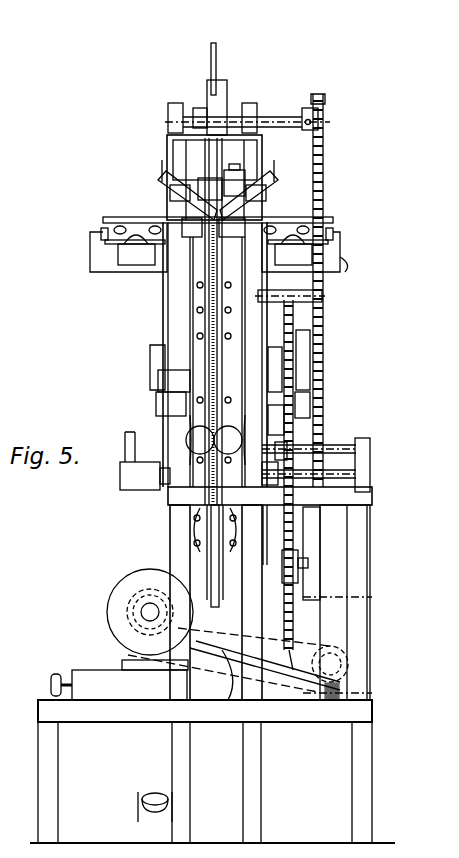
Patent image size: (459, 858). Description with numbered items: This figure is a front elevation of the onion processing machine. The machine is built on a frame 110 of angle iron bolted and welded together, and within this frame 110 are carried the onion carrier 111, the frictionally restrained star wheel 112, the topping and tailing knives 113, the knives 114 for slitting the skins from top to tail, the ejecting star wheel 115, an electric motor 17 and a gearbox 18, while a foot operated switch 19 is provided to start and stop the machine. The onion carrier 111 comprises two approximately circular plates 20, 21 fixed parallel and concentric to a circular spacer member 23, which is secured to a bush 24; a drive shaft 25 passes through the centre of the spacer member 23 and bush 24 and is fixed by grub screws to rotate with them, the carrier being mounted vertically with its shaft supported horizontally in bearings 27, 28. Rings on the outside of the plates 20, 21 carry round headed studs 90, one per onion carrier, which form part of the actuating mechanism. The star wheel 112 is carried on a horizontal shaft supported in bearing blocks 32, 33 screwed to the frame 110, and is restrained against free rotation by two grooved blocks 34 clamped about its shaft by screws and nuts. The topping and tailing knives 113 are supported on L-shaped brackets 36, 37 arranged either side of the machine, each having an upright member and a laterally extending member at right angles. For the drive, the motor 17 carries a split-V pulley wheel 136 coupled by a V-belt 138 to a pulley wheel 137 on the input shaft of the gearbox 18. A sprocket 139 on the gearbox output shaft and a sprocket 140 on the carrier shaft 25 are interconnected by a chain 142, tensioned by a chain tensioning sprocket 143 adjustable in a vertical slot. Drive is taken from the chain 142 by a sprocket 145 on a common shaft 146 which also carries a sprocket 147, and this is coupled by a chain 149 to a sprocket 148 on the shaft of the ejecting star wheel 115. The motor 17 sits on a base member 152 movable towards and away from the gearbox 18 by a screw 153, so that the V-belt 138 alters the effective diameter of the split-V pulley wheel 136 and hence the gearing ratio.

The ejecting star wheel 115 is at (233, 82).
The sprocket 148 is at (322, 109).
The chain 149 is at (325, 158).
The frictionally restrained star wheel 112 is at (187, 181).
The blocks 34 is at (246, 176).
The bearing block 33 is at (172, 186).
The bearing block 32 is at (268, 188).
The knives for slitting 114 is at (279, 213).
The L-shaped bracket 37 is at (90, 254).
The topping and tailing knives 113 is at (351, 250).
The L-shaped bracket 36 is at (350, 272).
The onion carrier 111 is at (199, 299).
The round headed studs 90 is at (298, 316).
The bearing 28 is at (270, 372).
The bearing 27 is at (152, 352).
The bush 24 is at (168, 384).
The drive shaft 25 is at (158, 402).
The sprocket 140 is at (302, 408).
The sprocket 145 is at (288, 450).
The common shaft 146 is at (340, 452).
The sprocket 147 is at (342, 478).
The circular spacer member 23 is at (205, 520).
The plate 20 is at (260, 550).
The chain 142 is at (330, 542).
The plate 21 is at (205, 577).
The chain tensioning sprocket 143 is at (310, 568).
The pulley wheel 136 is at (150, 610).
The electric motor 17 is at (110, 614).
The gearbox 18 is at (340, 616).
The pulley wheel 137 is at (350, 658).
The screw 153 is at (55, 674).
The base member 152 is at (92, 684).
The sprocket 139 is at (292, 664).
The V-belt 138 is at (228, 702).
The frame 110 is at (380, 715).
The foot operated switch 19 is at (156, 795).